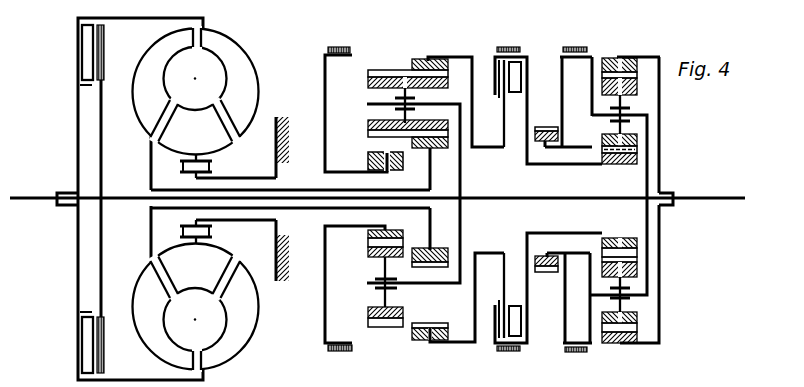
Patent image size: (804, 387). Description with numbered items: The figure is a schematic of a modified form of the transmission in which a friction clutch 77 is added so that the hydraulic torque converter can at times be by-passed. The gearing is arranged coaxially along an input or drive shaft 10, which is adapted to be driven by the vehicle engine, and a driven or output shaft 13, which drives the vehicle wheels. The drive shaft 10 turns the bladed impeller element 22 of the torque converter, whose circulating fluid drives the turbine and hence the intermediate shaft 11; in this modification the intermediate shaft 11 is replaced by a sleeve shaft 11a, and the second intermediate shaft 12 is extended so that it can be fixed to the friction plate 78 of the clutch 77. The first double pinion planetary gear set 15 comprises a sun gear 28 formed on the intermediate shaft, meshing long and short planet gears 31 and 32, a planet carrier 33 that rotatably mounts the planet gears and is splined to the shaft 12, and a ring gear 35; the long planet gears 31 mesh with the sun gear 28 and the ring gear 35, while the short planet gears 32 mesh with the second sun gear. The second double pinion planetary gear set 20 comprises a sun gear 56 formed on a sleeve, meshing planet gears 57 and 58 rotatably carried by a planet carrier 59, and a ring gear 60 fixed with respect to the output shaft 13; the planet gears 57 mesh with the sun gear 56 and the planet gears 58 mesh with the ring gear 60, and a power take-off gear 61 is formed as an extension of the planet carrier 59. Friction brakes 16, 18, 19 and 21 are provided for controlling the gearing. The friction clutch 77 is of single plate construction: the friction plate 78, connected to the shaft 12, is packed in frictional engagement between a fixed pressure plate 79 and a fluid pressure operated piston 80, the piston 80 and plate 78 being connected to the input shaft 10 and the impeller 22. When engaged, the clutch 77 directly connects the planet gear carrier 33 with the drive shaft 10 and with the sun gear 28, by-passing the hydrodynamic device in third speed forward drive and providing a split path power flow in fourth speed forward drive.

The input shaft 10 is at (24, 197).
The intermediate shaft 11 is at (254, 53).
The sleeve shaft 11a is at (308, 210).
The second intermediate shaft 12 is at (553, 199).
The output shaft 13 is at (719, 197).
The first double pinion planetary gear set 15 is at (395, 64).
The friction brake 16 is at (342, 45).
The friction brake 18 is at (514, 43).
The friction brake 19 is at (489, 60).
The second double pinion planetary gear set 20 is at (646, 90).
The friction brake 21 is at (576, 43).
The bladed impeller element 22 is at (248, 323).
The sun gear 28 is at (449, 263).
The long planet gears 31 is at (367, 136).
The short planet gears 32 is at (381, 323).
The planet carrier 33 is at (462, 168).
The ring gear 35 is at (428, 325).
The sun gear 56 is at (634, 253).
The planet gears 57 is at (601, 83).
The planet gears 58 is at (638, 262).
The planet carrier 59 is at (650, 162).
The ring gear 60 is at (641, 49).
The power take-off gear 61 is at (552, 273).
The friction clutch 77 is at (92, 98).
The friction plate 78 is at (106, 42).
The fixed pressure plate 79 is at (106, 342).
The fluid pressure operated piston 80 is at (92, 345).